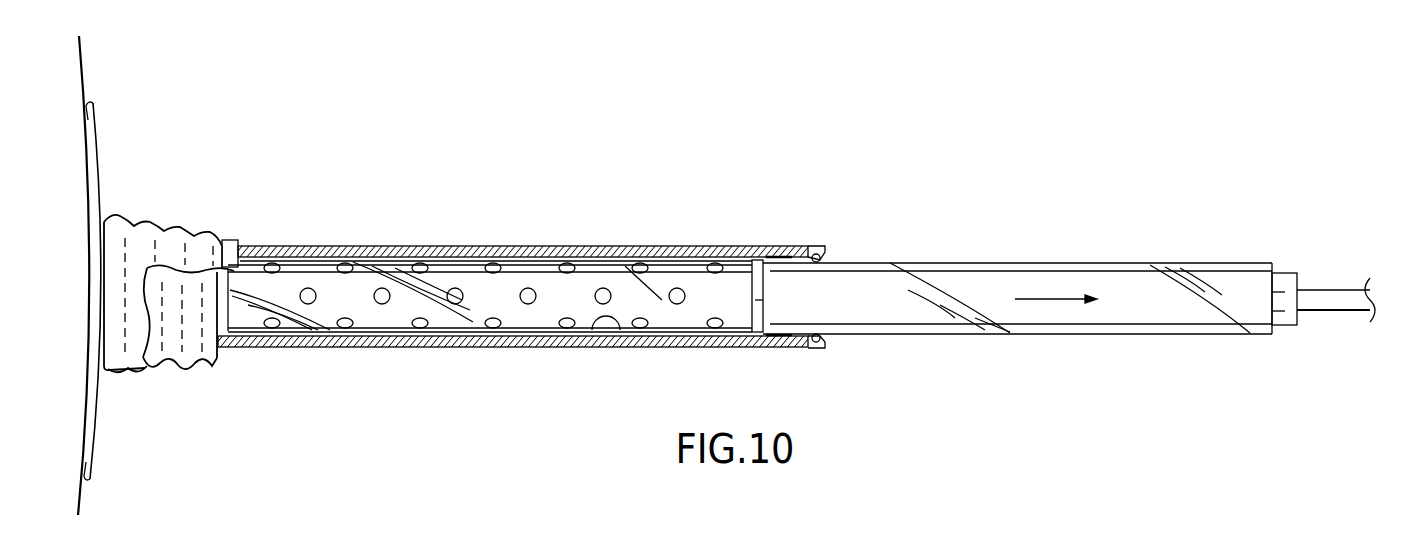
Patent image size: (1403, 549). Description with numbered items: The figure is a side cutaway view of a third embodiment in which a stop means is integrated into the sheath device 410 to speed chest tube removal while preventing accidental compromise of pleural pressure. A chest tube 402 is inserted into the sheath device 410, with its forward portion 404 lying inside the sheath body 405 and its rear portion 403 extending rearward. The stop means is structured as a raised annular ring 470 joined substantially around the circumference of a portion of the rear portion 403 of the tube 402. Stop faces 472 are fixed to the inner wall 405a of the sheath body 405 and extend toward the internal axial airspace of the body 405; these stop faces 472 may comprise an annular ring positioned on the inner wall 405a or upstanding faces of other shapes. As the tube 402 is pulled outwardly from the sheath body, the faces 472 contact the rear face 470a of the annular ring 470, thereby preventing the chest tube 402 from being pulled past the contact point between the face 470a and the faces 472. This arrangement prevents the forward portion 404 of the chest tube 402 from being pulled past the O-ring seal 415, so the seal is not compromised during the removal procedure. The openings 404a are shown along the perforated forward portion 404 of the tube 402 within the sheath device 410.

The sheath body 405 is at (790, 112).
The sheath device 410 is at (428, 245).
The forward portion of the chest tube 404 is at (546, 282).
The holes 404a is at (382, 305).
The inner wall of the sheath body 405a is at (619, 332).
The raised annular ring 470 is at (753, 285).
The rear face of the annular ring 470a is at (778, 345).
The stop faces 472 is at (788, 255).
The O-ring seal 415 is at (817, 350).
The chest tube 402 is at (978, 263).
The rear portion of the tube 403 is at (1180, 310).